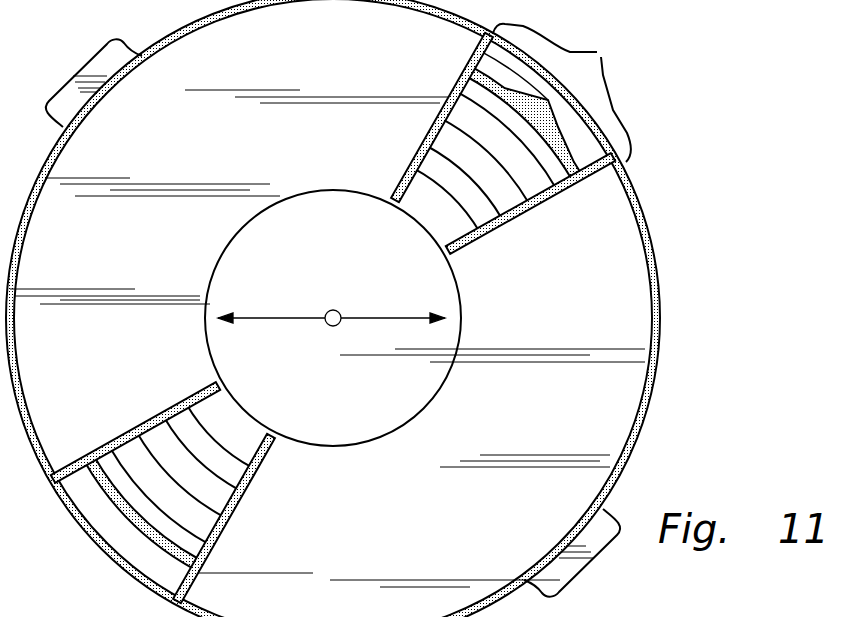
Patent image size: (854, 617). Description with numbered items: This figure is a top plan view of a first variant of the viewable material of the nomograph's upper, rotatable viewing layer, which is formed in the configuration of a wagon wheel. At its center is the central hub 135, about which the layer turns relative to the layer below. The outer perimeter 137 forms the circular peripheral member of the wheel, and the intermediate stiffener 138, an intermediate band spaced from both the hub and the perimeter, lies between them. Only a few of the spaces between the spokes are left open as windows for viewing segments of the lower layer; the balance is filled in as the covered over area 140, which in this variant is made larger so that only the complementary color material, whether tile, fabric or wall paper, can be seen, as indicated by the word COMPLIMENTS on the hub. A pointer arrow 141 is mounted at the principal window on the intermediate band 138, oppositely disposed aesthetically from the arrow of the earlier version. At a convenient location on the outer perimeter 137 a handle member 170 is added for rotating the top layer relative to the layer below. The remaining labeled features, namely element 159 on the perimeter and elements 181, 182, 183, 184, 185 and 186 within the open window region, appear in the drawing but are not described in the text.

The central hub 135 is at (355, 411).
The outer perimeter 137 is at (656, 226).
The intermediate stiffener 138 is at (583, 173).
The covered over area 140 is at (382, 504).
The pointer arrow 141 is at (474, 50).
The mounting tab 159 is at (597, 52).
The handle member 170 is at (100, 68).
The first arcuate track 181 is at (208, 374).
The second arcuate track 182 is at (200, 397).
The third arcuate track 183 is at (182, 417).
The fourth arcuate track 184 is at (220, 485).
The outer arcuate band 185 is at (203, 513).
The radial wall of slot 186 is at (197, 543).